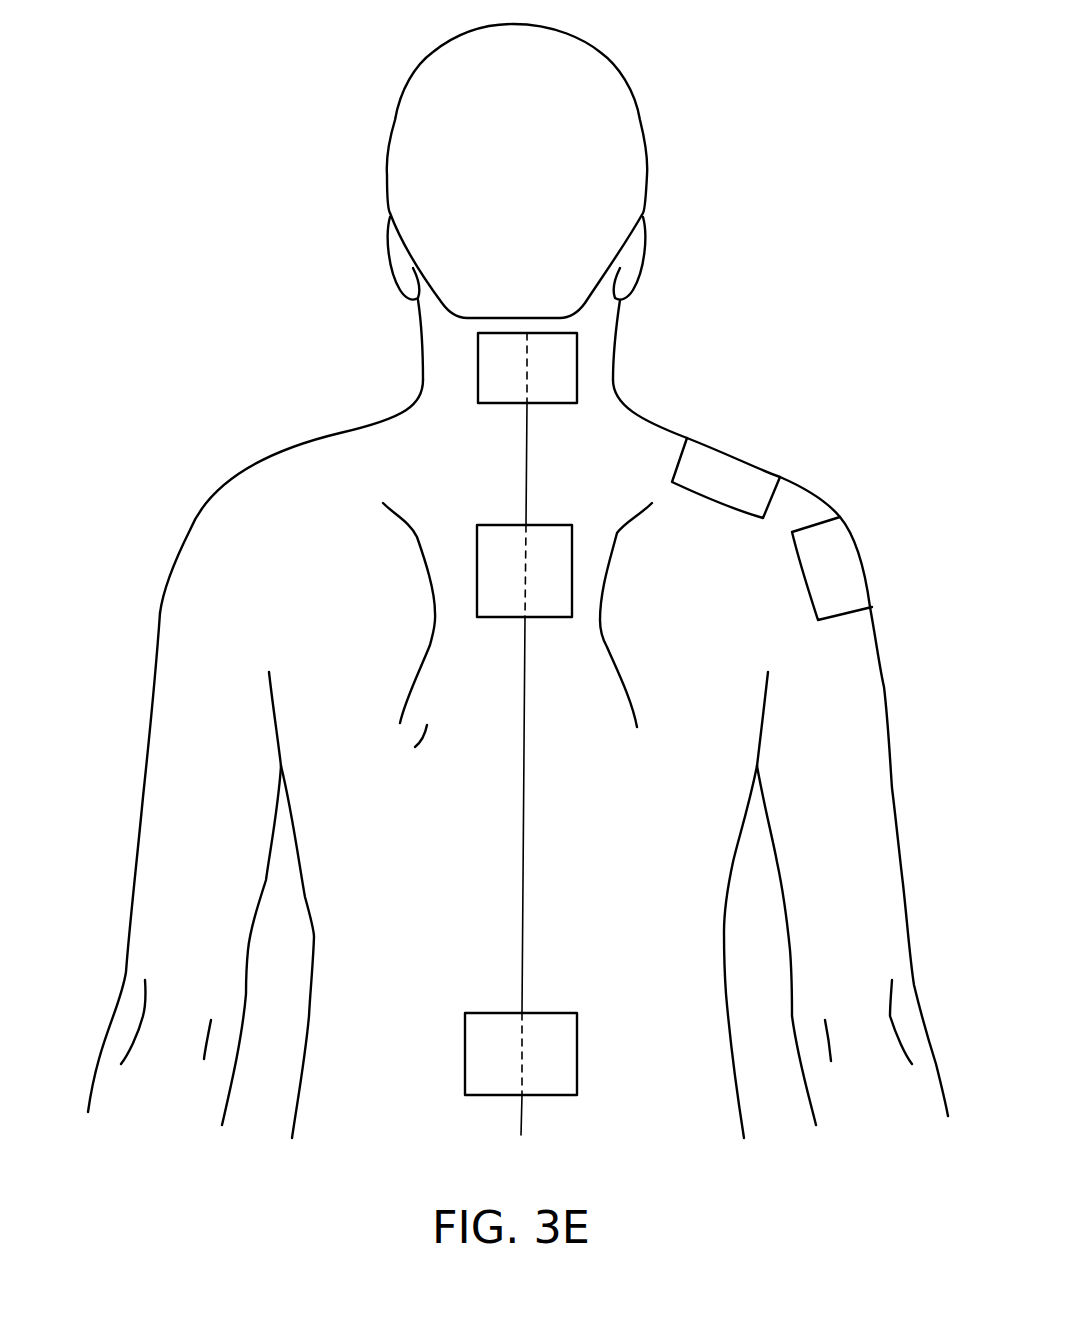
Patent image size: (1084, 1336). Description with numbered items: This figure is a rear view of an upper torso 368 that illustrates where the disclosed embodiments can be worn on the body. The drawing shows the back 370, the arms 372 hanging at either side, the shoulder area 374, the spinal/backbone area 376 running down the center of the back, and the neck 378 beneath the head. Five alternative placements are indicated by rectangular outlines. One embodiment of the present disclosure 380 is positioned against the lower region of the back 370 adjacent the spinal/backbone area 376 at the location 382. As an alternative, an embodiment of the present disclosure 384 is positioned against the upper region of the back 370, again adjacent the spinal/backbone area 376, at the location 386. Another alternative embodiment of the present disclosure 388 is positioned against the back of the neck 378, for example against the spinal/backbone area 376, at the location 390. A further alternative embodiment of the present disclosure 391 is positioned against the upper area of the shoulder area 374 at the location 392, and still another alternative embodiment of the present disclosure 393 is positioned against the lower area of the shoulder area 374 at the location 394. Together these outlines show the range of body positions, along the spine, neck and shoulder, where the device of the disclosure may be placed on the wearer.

The upper torso 368 is at (502, 581).
The back 370 is at (617, 781).
The arms 372 is at (116, 843).
The shoulder area 374 is at (272, 448).
The spinal/backbone area 376 is at (518, 861).
The neck 378 is at (412, 364).
The embodiment of the present disclosure 380 is at (567, 1054).
The position on lower region of back 382 is at (561, 1031).
The embodiment of the present disclosure 384 is at (557, 580).
The position on upper region of back 386 is at (577, 545).
The embodiment of the present disclosure 388 is at (547, 357).
The position on back of neck 390 is at (583, 357).
The embodiment of the present disclosure 391 is at (727, 478).
The position on upper shoulder area 392 is at (726, 492).
The embodiment of the present disclosure 393 is at (847, 562).
The position on lower shoulder area 394 is at (870, 590).